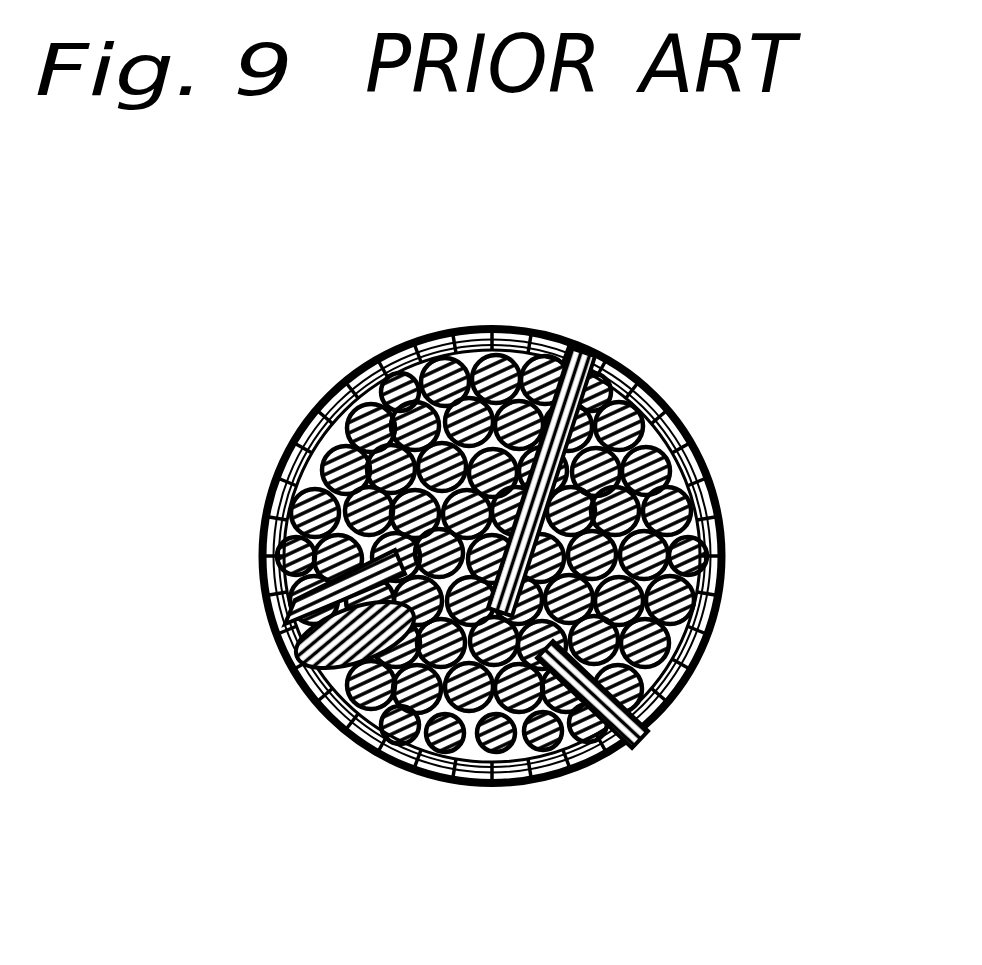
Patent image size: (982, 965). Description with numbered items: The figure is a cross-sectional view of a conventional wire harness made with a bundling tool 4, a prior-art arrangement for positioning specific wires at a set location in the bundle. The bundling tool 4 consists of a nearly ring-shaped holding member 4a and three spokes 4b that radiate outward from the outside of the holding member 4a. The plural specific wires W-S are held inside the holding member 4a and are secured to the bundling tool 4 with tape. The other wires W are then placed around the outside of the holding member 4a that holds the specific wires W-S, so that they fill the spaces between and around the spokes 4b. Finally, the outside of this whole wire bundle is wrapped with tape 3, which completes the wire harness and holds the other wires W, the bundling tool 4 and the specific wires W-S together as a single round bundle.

The tape 3 is at (724, 500).
The bundling tool 4 is at (547, 779).
The holding member 4a is at (300, 641).
The spokes 4b is at (580, 347).
The wires W is at (481, 560).
The specific wires W-S is at (290, 456).